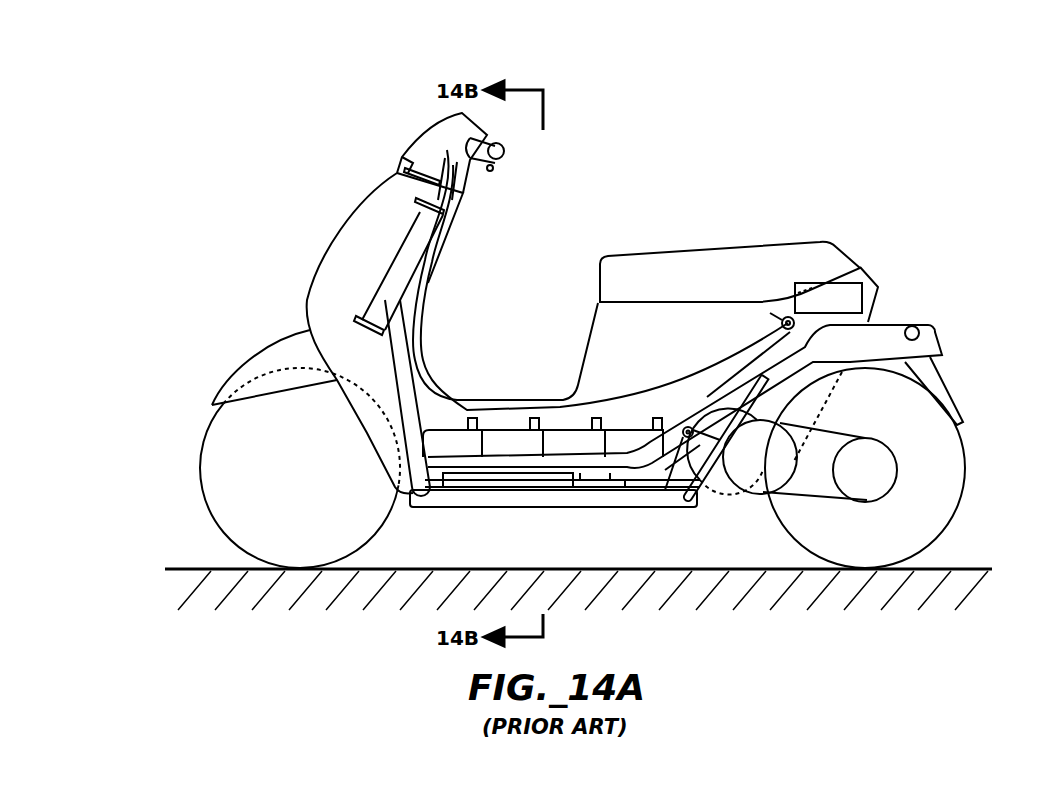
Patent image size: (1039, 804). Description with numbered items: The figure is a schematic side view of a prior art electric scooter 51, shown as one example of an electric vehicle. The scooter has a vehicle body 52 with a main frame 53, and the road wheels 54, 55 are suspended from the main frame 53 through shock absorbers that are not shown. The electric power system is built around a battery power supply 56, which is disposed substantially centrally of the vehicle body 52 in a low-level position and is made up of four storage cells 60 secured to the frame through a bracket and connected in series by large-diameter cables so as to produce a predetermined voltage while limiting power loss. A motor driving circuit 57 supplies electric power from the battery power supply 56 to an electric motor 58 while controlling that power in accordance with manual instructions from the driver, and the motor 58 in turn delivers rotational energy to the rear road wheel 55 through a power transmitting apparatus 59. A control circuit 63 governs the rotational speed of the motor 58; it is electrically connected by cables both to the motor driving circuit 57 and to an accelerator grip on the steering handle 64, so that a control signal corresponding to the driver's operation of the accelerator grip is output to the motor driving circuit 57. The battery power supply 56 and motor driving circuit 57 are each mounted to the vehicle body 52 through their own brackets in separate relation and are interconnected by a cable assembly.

The electric scooter 51 is at (688, 168).
The vehicle body 52 is at (748, 247).
The main frame 53 is at (737, 380).
The road wheel 54 is at (222, 443).
The road wheel 55 is at (950, 480).
The battery power supply 56 is at (558, 420).
The motor driving circuit 57 is at (547, 477).
The electric motor 58 is at (722, 493).
The power transmitting apparatus 59 is at (758, 503).
The storage cells 60 is at (447, 440).
The control circuit 63 is at (852, 296).
The steering handle 64 is at (477, 147).